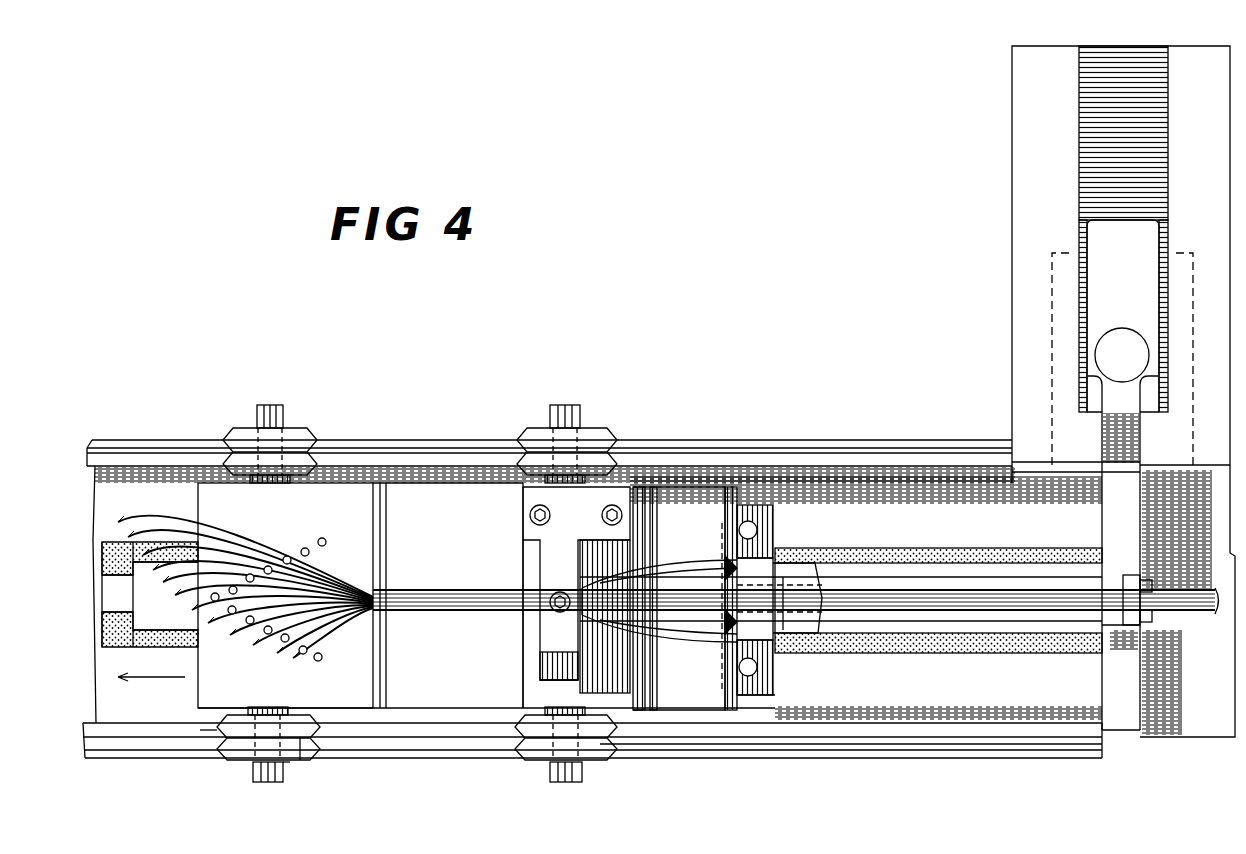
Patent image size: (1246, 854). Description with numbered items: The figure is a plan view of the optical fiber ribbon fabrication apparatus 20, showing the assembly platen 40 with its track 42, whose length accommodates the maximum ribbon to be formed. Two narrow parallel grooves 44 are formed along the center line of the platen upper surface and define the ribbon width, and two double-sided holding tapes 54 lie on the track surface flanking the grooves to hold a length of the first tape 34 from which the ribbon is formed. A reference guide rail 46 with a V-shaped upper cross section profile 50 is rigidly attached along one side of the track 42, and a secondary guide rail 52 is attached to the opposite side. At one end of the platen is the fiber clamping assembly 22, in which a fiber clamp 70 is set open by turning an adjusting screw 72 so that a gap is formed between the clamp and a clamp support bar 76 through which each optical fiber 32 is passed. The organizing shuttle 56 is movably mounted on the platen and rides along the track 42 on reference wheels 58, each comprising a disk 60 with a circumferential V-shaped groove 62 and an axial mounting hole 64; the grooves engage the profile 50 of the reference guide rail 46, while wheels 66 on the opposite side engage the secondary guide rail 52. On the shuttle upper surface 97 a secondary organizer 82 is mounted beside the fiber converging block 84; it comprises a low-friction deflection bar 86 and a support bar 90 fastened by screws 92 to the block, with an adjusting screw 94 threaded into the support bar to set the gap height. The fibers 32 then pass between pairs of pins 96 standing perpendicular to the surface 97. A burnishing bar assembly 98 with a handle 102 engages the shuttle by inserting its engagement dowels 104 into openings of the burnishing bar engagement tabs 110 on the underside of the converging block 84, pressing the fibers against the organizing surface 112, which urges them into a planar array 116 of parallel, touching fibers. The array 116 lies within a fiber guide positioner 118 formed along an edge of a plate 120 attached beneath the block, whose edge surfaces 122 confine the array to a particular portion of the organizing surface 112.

The ribbon fabrication apparatus 20 is at (686, 342).
The fiber clamping assembly 22 is at (1012, 333).
The optical fiber 32 is at (283, 546).
The first tape 34 is at (940, 618).
The assembly platen 40 is at (876, 446).
The track 42 is at (650, 598).
The groove 44 is at (100, 602).
The reference guide rail 46 is at (854, 752).
The V-shaped upper cross section profile 50 is at (970, 750).
The secondary guide rail 52 is at (958, 446).
The holding tape 54 is at (104, 546).
The organizing shuttle 56 is at (420, 490).
The reference wheel 58 is at (226, 752).
The disk 60 is at (316, 754).
The V-shaped groove 62 is at (217, 730).
The mounting hole 64 is at (288, 762).
The wheel 66 is at (228, 440).
The fiber clamp 70 is at (1121, 571).
The adjusting screw 72 is at (1128, 334).
The clamp support bar 76 is at (1121, 677).
The secondary organizer 82 is at (524, 506).
The fiber converging block 84 is at (696, 492).
The deflection bar 86 is at (540, 674).
The support bar 90 is at (525, 540).
The screw 92 is at (604, 515).
The adjusting screw 94 is at (562, 619).
The pin 96 is at (322, 540).
The upper surface 97 is at (366, 563).
The burnishing bar assembly 98 is at (830, 565).
The handle 102 is at (808, 570).
The engagement dowel 104 is at (760, 668).
The burnishing bar engagement tab 110 is at (760, 696).
The organizing surface 112 is at (696, 618).
The planar array 116 is at (712, 578).
The fiber guide positioner 118 is at (730, 622).
The plate 120 is at (779, 599).
The edge surface 122 is at (779, 599).